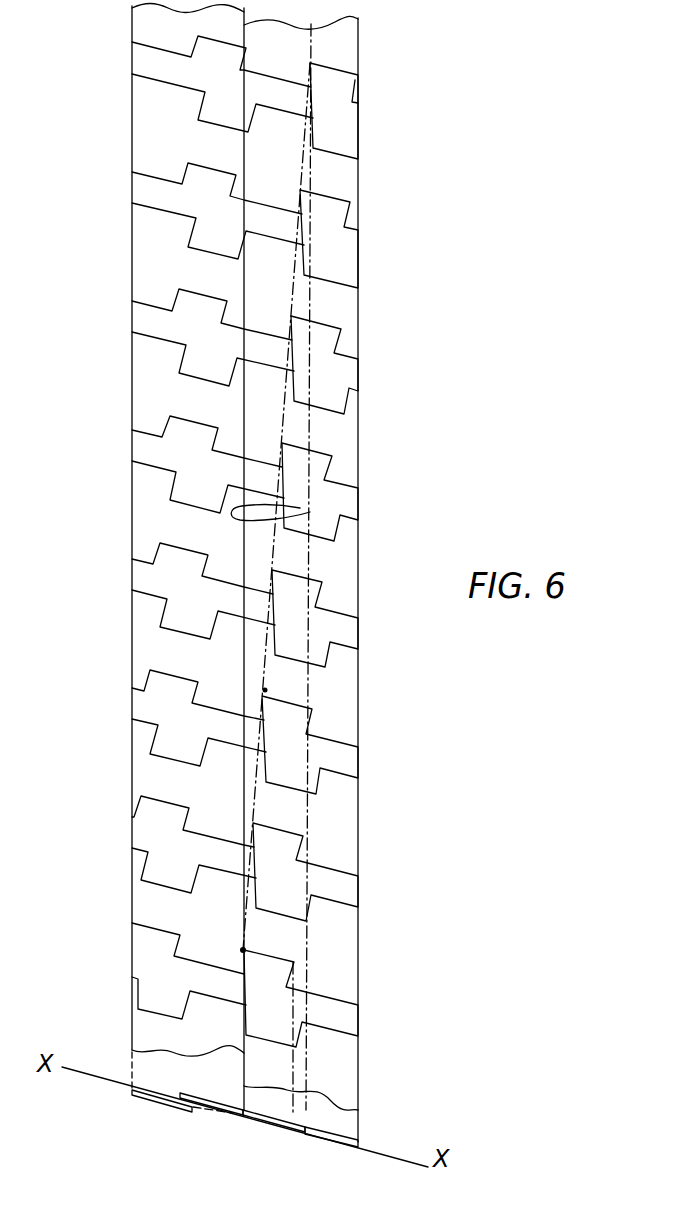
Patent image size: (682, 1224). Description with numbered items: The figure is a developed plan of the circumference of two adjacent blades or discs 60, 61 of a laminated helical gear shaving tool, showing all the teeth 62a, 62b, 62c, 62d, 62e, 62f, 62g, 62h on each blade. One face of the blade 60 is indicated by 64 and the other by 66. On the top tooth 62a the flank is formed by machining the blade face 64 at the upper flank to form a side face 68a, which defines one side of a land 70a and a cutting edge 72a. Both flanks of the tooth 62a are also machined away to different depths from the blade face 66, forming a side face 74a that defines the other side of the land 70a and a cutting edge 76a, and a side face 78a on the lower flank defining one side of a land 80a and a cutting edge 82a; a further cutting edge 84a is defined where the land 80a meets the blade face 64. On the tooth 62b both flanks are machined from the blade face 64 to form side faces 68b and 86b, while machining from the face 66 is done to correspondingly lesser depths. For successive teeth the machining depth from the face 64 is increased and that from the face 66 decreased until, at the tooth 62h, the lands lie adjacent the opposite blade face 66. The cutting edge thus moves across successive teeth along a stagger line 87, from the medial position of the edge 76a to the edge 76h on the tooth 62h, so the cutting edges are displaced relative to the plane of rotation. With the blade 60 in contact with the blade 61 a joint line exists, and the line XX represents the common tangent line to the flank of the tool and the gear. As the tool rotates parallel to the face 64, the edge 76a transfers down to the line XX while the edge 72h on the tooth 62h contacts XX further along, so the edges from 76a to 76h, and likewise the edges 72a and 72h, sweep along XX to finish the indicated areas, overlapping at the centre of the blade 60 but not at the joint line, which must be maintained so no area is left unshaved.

The blade 60 is at (362, 386).
The blade 61 is at (130, 323).
The top tooth 62a is at (362, 124).
The tooth 62b is at (328, 250).
The tooth 62c is at (333, 373).
The tooth 62d is at (332, 497).
The tooth 62e is at (318, 633).
The tooth 62f is at (328, 762).
The tooth 62g is at (330, 885).
The tooth 62h is at (358, 1017).
The blade face 64 is at (305, 512).
The blade face 66 is at (310, 512).
The side face 68a is at (355, 97).
The side face 68b is at (350, 207).
The land 70a is at (343, 68).
The cutting edge 72a is at (353, 78).
The cutting edge 72h is at (293, 962).
The side face 74a is at (308, 64).
The cutting edge 76a is at (338, 68).
The cutting edge 76h is at (243, 950).
The side face 78a is at (318, 150).
The land 80a is at (330, 162).
The cutting edge 82a is at (311, 154).
The cutting edge 84a is at (331, 167).
The side face 86b is at (358, 282).
The stagger line 87 is at (265, 690).